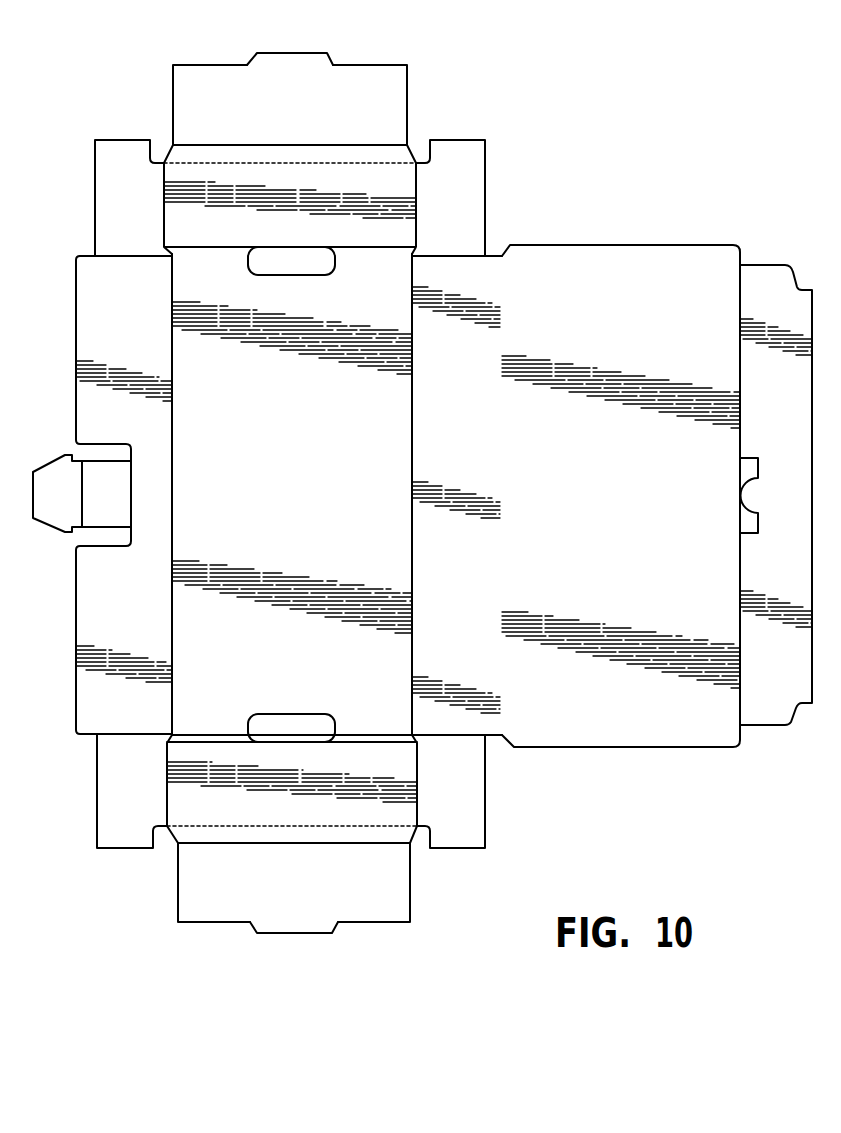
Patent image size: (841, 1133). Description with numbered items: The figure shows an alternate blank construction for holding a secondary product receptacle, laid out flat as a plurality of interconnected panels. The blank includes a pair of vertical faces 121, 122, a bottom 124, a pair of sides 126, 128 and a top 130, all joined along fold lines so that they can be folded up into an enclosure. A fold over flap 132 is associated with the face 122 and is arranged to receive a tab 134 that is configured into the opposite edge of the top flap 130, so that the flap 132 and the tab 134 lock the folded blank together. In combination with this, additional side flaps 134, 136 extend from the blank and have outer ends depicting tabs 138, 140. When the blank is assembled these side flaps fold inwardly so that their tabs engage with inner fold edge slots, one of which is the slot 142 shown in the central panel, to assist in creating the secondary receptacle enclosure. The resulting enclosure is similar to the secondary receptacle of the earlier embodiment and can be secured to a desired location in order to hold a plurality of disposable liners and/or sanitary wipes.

The vertical face 121 is at (292, 498).
The vertical face 122 is at (639, 473).
The bottom 124 is at (470, 398).
The side 126 is at (405, 768).
The side 128 is at (377, 189).
The top 130 is at (135, 315).
The fold over flap 132 is at (795, 398).
The tab 134 is at (57, 508).
The side flap 136 is at (203, 103).
The tab 138 is at (276, 53).
The tab 140 is at (290, 937).
The inner fold edge slot 142 is at (265, 275).